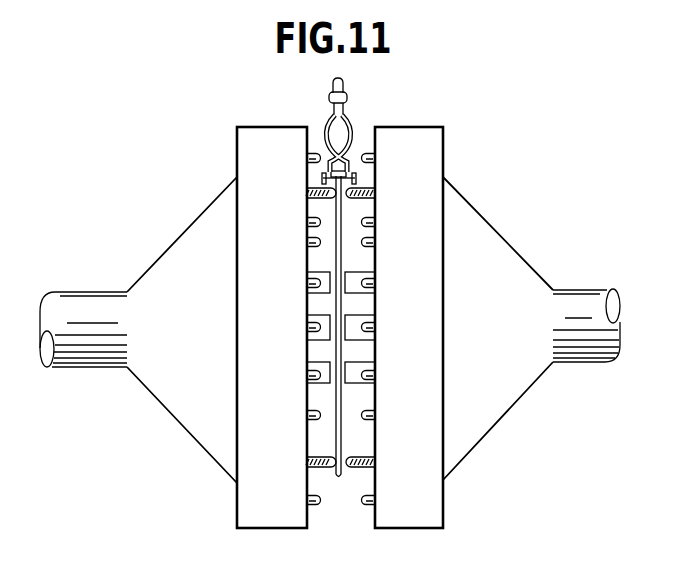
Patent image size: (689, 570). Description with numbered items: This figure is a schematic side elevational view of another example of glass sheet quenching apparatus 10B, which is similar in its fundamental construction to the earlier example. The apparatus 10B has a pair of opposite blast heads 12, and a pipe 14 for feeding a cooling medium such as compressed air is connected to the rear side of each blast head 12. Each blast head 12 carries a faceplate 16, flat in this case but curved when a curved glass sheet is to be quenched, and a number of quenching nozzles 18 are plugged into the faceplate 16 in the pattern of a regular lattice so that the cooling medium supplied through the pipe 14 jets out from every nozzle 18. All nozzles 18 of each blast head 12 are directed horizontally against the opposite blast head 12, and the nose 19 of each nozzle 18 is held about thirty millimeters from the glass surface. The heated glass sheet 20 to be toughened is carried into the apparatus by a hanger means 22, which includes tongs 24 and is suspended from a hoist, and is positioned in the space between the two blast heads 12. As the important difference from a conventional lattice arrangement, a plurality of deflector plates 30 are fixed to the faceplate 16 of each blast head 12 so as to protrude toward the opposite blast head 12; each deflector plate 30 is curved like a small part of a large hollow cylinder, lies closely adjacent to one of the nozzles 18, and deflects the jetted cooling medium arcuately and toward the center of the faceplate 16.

The quenching apparatus 10B is at (474, 185).
The blast head 12 is at (283, 520).
The pipe 14 is at (93, 298).
The faceplate 16 is at (308, 222).
The quenching nozzle 18 is at (312, 320).
The nose 19 is at (322, 381).
The glass sheet 20 is at (338, 481).
The hanger means 22 is at (346, 110).
The tongs 24 is at (326, 140).
The deflector plate 30 is at (362, 271).